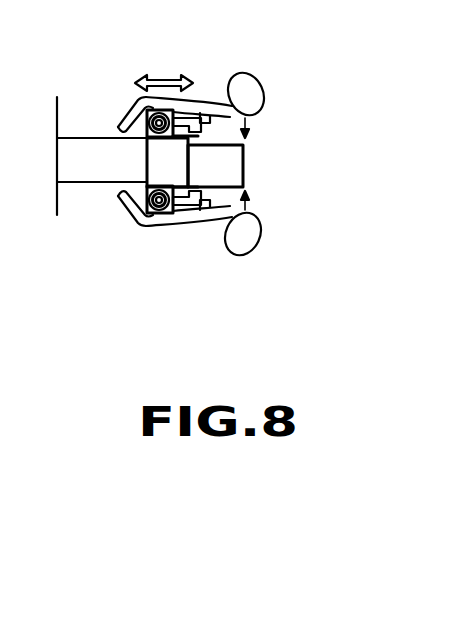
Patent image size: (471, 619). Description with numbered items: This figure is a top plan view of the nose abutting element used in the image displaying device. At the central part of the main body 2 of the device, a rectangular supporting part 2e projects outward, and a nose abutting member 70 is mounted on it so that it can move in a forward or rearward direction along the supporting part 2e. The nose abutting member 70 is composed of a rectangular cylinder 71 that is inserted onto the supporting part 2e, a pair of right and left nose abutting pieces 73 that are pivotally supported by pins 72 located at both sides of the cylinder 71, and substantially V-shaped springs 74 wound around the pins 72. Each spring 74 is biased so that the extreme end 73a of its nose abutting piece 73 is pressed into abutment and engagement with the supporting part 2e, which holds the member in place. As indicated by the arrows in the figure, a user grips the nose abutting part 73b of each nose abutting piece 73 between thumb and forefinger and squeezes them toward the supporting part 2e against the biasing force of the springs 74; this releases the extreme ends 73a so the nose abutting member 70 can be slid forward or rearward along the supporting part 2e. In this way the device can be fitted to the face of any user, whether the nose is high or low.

The main body of the device 2 is at (57, 215).
The supporting part 2e is at (237, 163).
The nose abutting member 70 is at (262, 230).
The rectangular cylinder 71 is at (155, 160).
The pin 72 is at (150, 110).
The nose abutting piece 73 is at (222, 107).
The extreme end of nose abutting piece 73a is at (123, 125).
The nose abutting part 73b is at (248, 84).
The V-shaped spring 74 is at (205, 115).